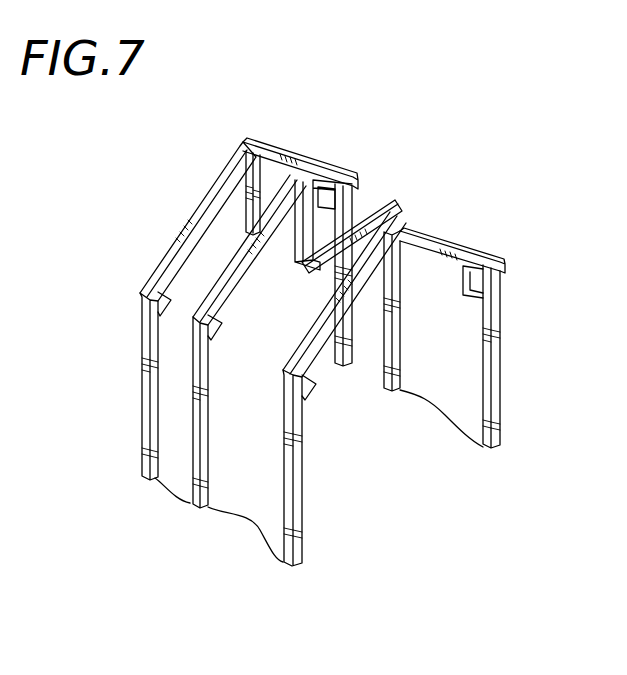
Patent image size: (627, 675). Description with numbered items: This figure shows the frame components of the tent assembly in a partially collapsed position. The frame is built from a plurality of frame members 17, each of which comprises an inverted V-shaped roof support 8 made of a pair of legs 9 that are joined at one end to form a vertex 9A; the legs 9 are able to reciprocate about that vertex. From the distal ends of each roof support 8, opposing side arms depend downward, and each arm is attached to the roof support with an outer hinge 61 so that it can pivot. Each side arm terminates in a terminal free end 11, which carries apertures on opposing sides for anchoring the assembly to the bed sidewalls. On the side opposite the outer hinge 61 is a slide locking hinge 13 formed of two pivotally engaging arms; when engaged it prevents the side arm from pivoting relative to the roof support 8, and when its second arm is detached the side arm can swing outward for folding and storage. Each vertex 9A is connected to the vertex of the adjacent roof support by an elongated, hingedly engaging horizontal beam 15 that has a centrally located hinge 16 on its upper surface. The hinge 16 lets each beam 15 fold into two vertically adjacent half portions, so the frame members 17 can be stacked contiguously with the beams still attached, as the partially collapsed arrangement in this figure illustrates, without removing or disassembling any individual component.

The inverted V-shaped roof support 8 is at (432, 238).
The leg 9 is at (193, 213).
The vertex 9A is at (413, 227).
The terminal free end 11 is at (503, 445).
The slide locking hinge 13 is at (316, 390).
The horizontal beam 15 is at (296, 270).
The hinge 16 is at (295, 235).
The frame member 17 is at (500, 335).
The outer hinge 61 is at (142, 298).